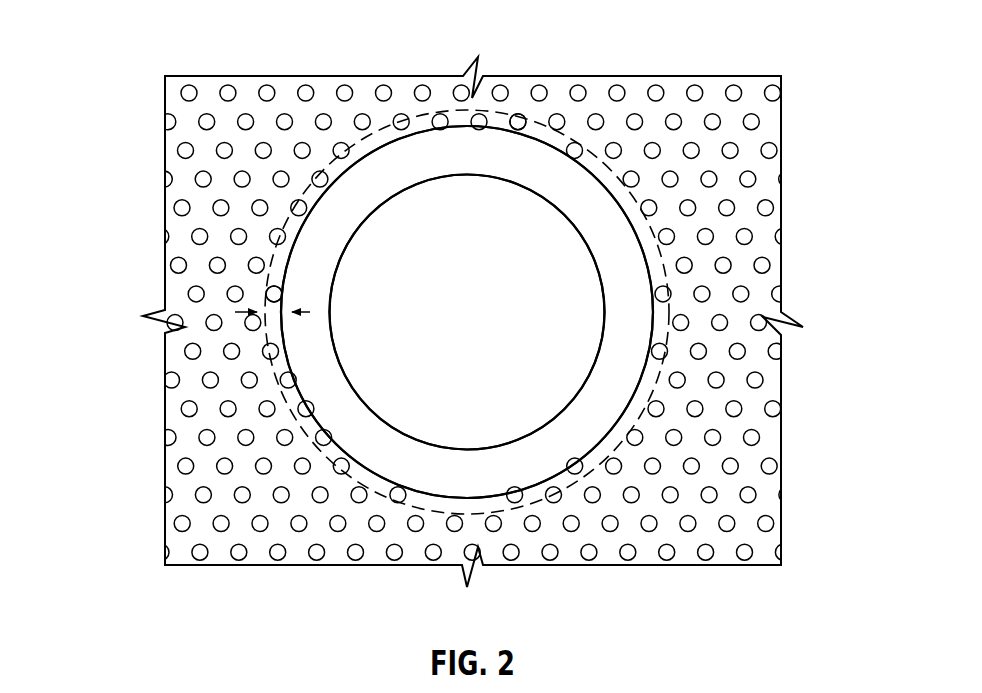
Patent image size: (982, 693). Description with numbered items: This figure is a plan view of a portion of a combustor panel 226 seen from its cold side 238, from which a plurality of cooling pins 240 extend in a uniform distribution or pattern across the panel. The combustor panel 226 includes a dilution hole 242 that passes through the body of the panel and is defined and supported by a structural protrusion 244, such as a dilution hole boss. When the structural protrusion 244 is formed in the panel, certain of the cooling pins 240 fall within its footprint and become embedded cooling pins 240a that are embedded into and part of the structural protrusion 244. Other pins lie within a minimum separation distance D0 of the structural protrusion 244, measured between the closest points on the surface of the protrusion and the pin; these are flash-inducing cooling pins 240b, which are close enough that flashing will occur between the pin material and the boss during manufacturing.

The combustor panel 226 is at (153, 43).
The cold side 238 is at (770, 128).
The cooling pins 240 is at (227, 90).
The embedded cooling pins 240a is at (477, 123).
The flash-inducing cooling pins 240b is at (519, 120).
The dilution hole 242 is at (492, 327).
The structural protrusion 244 is at (563, 193).
The minimum separation distance D0 is at (304, 313).